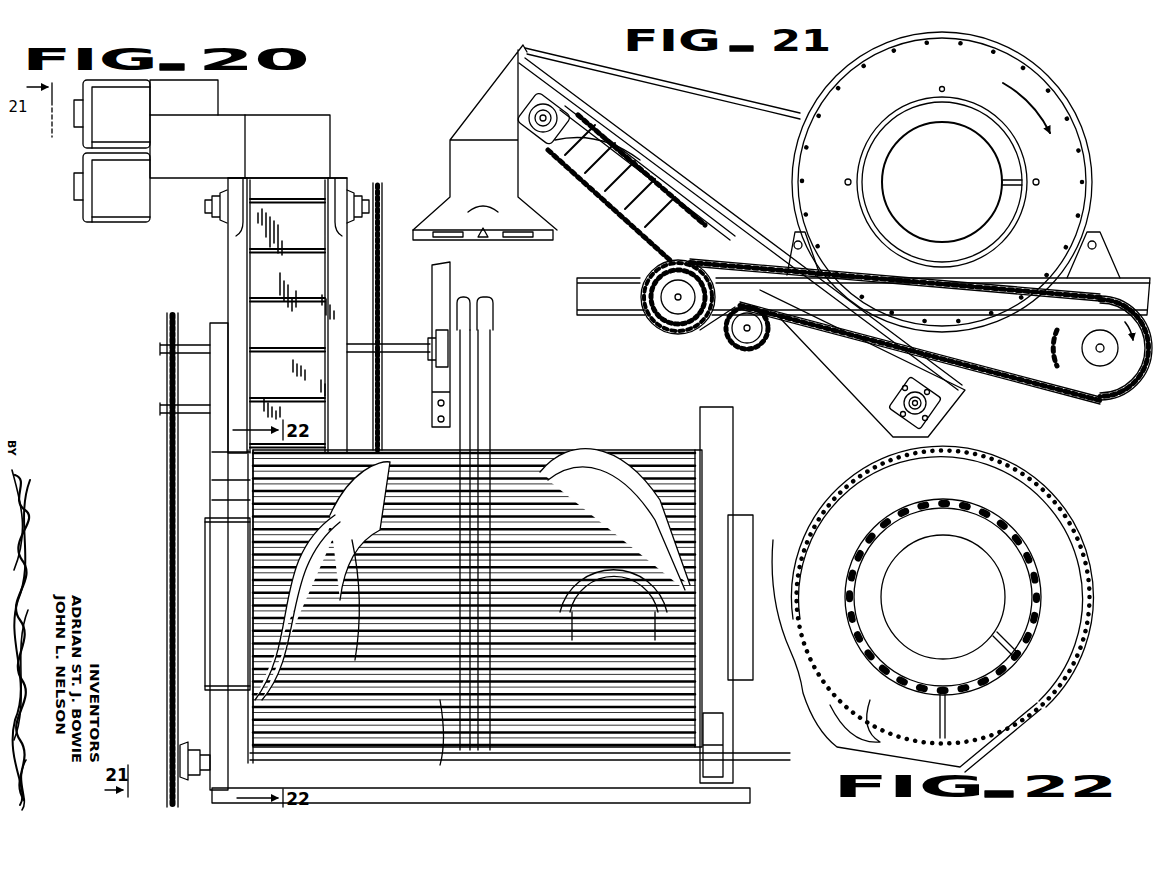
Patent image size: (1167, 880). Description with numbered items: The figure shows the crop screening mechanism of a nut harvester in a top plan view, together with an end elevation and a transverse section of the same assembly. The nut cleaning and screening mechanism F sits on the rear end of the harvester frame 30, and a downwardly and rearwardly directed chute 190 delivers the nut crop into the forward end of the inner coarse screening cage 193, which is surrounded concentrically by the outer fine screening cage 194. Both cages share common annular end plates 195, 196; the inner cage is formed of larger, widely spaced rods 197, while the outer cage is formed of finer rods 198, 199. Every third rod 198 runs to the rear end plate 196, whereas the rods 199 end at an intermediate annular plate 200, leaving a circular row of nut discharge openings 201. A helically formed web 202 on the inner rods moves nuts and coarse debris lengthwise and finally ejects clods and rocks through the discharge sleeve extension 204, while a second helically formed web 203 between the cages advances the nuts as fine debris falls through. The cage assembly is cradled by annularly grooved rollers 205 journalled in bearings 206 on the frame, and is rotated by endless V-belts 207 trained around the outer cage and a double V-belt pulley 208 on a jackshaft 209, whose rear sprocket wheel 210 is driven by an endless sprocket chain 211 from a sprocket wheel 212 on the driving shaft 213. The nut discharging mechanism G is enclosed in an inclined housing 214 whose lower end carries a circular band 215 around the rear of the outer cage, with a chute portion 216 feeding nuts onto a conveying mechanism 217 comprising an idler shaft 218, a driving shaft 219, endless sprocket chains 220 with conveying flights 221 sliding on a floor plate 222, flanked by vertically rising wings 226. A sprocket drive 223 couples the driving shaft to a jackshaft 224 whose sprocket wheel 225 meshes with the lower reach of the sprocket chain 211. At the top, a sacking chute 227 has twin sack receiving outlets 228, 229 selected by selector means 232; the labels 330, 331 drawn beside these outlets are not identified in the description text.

In FIG. 20, the nut discharging mechanism G is at (296, 108).
In FIG. 21, the nut discharging mechanism G is at (465, 92).
In FIG. 20, the nut cleaning and screening mechanism F is at (208, 511).
In FIG. 21, the nut cleaning and screening mechanism F is at (1082, 100).
In FIG. 20, the harvester frame 30 is at (440, 277).
In FIG. 21, the harvester frame 30 is at (590, 300).
In FIG. 20, the chute 190 is at (748, 532).
In FIG. 20, the inner coarse screening cage 193 is at (280, 605).
In FIG. 22, the inner coarse screening cage 193 is at (943, 597).
In FIG. 20, the outer fine screening cage 194 is at (672, 688).
In FIG. 20, the annular end plate 195 is at (703, 478).
In FIG. 22, the annular end plate 195 is at (950, 482).
In FIG. 20, the annular end plate 196 is at (262, 722).
In FIG. 20, the rods 197 is at (410, 593).
In FIG. 22, the rods 197 is at (979, 685).
In FIG. 20, the rods 198 is at (262, 527).
In FIG. 20, the rods 199 is at (350, 735).
In FIG. 20, the intermediate annular plate 200 is at (320, 740).
In FIG. 20, the nut discharge openings 201 is at (260, 498).
In FIG. 22, the nut discharge openings 201 is at (855, 721).
In FIG. 20, the helically formed web 202 is at (340, 640).
In FIG. 21, the helically formed web 202 is at (952, 182).
In FIG. 22, the helically formed web 202 is at (943, 597).
In FIG. 20, the helically formed web 203 is at (378, 462).
In FIG. 22, the helically formed web 203 is at (1058, 545).
In FIG. 20, the discharge sleeve extension 204 is at (220, 565).
In FIG. 20, the annularly grooved rollers 205 is at (238, 755).
In FIG. 20, the bearings 206 is at (210, 447).
In FIG. 21, the bearings 206 is at (806, 254).
In FIG. 20, the endless V-belts 207 is at (490, 418).
In FIG. 21, the endless V-belts 207 is at (803, 112).
In FIG. 20, the double V-belt pulley 208 is at (497, 372).
In FIG. 21, the double V-belt pulley 208 is at (665, 318).
In FIG. 20, the jackshaft 209 is at (195, 348).
In FIG. 21, the jackshaft 209 is at (670, 264).
In FIG. 20, the sprocket wheel 210 is at (165, 338).
In FIG. 21, the sprocket wheel 210 is at (678, 312).
In FIG. 20, the endless sprocket chain 211 is at (167, 527).
In FIG. 21, the endless sprocket chain 211 is at (1065, 375).
In FIG. 20, the sprocket wheel 212 is at (186, 756).
In FIG. 21, the sprocket wheel 212 is at (1128, 378).
In FIG. 20, the driving shaft 213 is at (190, 766).
In FIG. 21, the driving shaft 213 is at (1100, 355).
In FIG. 20, the inclined housing 214 is at (383, 303).
In FIG. 21, the inclined housing 214 is at (720, 230).
In FIG. 20, the circular band 215 is at (212, 445).
In FIG. 22, the circular band 215 is at (1098, 567).
In FIG. 22, the chute portion 216 is at (808, 640).
In FIG. 20, the conveying mechanism 217 is at (280, 287).
In FIG. 21, the conveying mechanism 217 is at (632, 180).
In FIG. 21, the idler shaft 218 is at (920, 405).
In FIG. 20, the driving shaft 219 is at (385, 203).
In FIG. 21, the driving shaft 219 is at (560, 112).
In FIG. 21, the endless sprocket chains 220 is at (640, 158).
In FIG. 20, the conveying flights 221 is at (287, 397).
In FIG. 21, the conveying flights 221 is at (590, 178).
In FIG. 20, the floor plate 222 is at (287, 323).
In FIG. 21, the floor plate 222 is at (700, 185).
In FIG. 20, the sprocket drive 223 is at (383, 329).
In FIG. 20, the jackshaft 224 is at (408, 408).
In FIG. 21, the jackshaft 224 is at (772, 368).
In FIG. 20, the sprocket wheel 225 is at (167, 400).
In FIG. 20, the wings 226 is at (332, 270).
In FIG. 21, the wings 226 is at (686, 85).
In FIG. 21, the sacking chute 227 is at (448, 156).
In FIG. 21, the sack receiving outlet 228 is at (428, 236).
In FIG. 21, the sack receiving outlet 229 is at (530, 236).
In FIG. 21, the selector means 232 is at (483, 206).
In FIG. 20, the hydraulic cylinder 330 is at (83, 126).
In FIG. 21, the hydraulic cylinder 330 is at (481, 258).
In FIG. 20, the hydraulic cylinder 331 is at (83, 198).
In FIG. 21, the hydraulic cylinder 331 is at (547, 270).